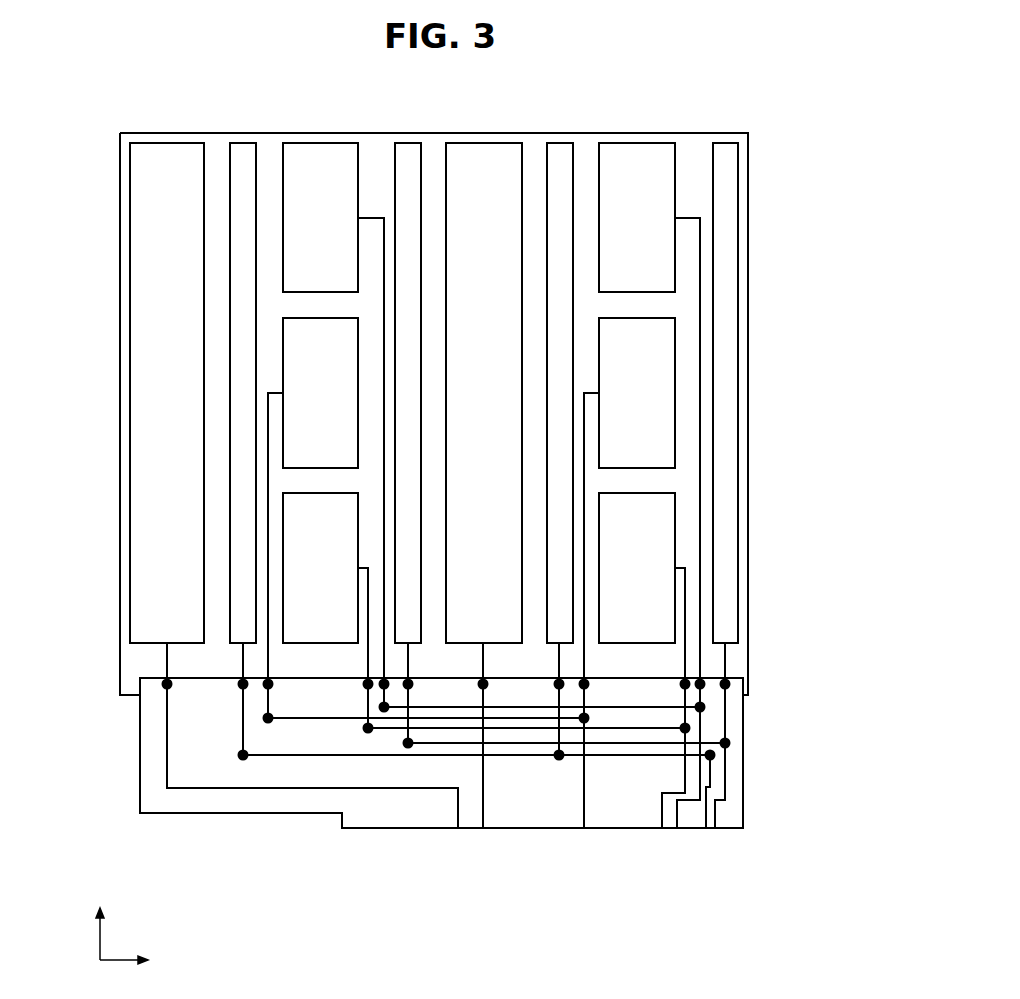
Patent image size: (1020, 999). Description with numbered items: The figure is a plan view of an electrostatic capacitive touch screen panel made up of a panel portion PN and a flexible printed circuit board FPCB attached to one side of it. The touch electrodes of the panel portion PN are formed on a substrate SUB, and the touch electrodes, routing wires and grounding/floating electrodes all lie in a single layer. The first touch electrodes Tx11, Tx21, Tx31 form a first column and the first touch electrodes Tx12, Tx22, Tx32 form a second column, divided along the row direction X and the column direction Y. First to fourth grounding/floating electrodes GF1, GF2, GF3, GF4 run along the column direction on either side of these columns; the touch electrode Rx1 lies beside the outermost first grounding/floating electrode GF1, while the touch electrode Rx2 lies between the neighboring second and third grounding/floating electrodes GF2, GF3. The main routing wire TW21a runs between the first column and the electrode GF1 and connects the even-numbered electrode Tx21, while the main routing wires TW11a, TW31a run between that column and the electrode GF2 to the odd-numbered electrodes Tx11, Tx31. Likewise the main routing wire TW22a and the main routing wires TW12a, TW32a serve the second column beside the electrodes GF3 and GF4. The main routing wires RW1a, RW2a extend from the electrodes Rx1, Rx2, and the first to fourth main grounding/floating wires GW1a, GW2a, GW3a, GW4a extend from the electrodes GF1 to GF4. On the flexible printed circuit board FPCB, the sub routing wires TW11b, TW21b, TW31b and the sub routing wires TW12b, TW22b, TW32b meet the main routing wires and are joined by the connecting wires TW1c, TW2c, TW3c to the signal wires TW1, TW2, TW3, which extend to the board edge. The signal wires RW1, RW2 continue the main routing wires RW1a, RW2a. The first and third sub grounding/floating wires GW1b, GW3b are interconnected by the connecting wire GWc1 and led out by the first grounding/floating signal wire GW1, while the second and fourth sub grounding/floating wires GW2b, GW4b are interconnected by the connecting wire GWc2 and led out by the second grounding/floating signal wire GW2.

The panel portion PN is at (112, 636).
The substrate SUB is at (127, 664).
The flexible printed circuit board FPCB is at (140, 813).
The 2-1 touch electrode Rx1 is at (165, 158).
The 2-2 touch electrode Rx2 is at (490, 158).
The first grounding/floating electrode GF1 is at (244, 158).
The second grounding/floating electrode GF2 is at (408, 158).
The third grounding/floating electrode GF3 is at (559, 158).
The fourth grounding/floating electrode GF4 is at (724, 158).
The 1-1 touch electrode Tx11 is at (320, 217).
The 1-2 touch electrode Tx12 is at (637, 217).
The 1-1 touch electrode Tx21 is at (320, 393).
The 1-2 touch electrode Tx22 is at (637, 393).
The 1-1 touch electrode Tx31 is at (320, 568).
The 1-2 touch electrode Tx32 is at (637, 568).
The 1-1b main routing wire TW11a is at (384, 306).
The 1-2b main routing wire TW12a is at (700, 306).
The 1-1a main routing wire TW21a is at (268, 485).
The 1-2a main routing wire TW22a is at (584, 485).
The 1-1b main routing wire TW31a is at (367, 653).
The 1-2b main routing wire TW32a is at (685, 629).
The 1-1 sub routing wire TW11b is at (395, 696).
The 1-2 sub routing wire TW12b is at (703, 695).
The 1-1 sub routing wire TW21b is at (271, 702).
The 1-2 sub routing wire TW22b is at (592, 700).
The 1-1 sub routing wire TW31b is at (366, 680).
The 1-2 sub routing wire TW32b is at (683, 688).
The 1-1 connecting wire TW1c is at (662, 712).
The 1-2 connecting wire TW2c is at (316, 721).
The 1-3 connecting wire TW3c is at (598, 732).
The 1-1 signal wire TW1 is at (676, 805).
The 1-2 signal wire TW2 is at (584, 812).
The 1-3 signal wire TW3 is at (661, 818).
The 2-1 main routing wire RW1a is at (170, 653).
The 2-2 main routing wire RW2a is at (485, 658).
The 2-1 signal wire RW1 is at (457, 802).
The 2-2 signal wire RW2 is at (485, 802).
The first main grounding/floating wire GW1a is at (242, 672).
The second main grounding/floating wire GW2a is at (410, 657).
The third main grounding/floating wire GW3a is at (561, 658).
The fourth main grounding/floating wire GW4a is at (728, 656).
The first sub grounding/floating wire GW1b is at (242, 737).
The second sub grounding/floating wire GW2b is at (412, 725).
The third sub grounding/floating wire GW3b is at (557, 690).
The fourth sub grounding/floating wire GW4b is at (727, 718).
The 2-1 connecting wire GWc1 is at (261, 754).
The 2-2 connecting wire GWc2 is at (552, 758).
The first grounding/floating signal wire GW1 is at (700, 818).
The second grounding/floating signal wire GW2 is at (718, 818).
The x-axis direction X is at (133, 960).
The y-axis direction Y is at (97, 920).